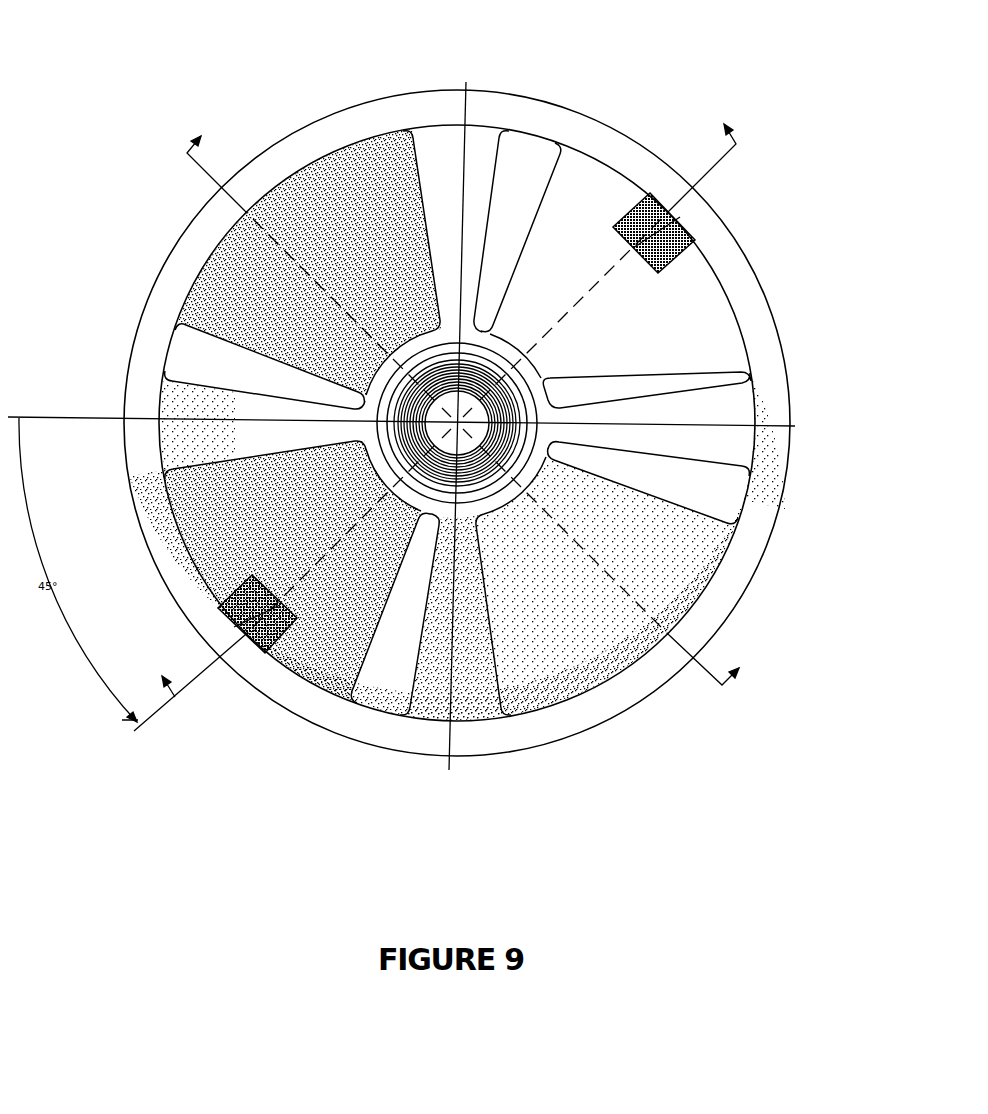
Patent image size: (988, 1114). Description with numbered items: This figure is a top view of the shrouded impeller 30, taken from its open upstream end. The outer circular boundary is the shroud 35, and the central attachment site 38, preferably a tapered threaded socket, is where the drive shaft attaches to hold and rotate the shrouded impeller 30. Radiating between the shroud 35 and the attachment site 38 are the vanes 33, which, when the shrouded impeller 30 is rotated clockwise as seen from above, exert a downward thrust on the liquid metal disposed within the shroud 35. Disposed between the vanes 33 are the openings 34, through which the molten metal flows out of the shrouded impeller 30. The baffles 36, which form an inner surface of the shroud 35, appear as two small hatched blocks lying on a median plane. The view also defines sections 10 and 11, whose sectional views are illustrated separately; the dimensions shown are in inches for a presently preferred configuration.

The shrouded impeller 30 is at (449, 393).
The vanes 33 is at (682, 335).
The openings 34 is at (716, 497).
The shroud 35 is at (155, 282).
The baffles 36 is at (687, 253).
The attachment site 38 is at (487, 407).
The section 10 is at (457, 416).
The section 11 is at (478, 405).